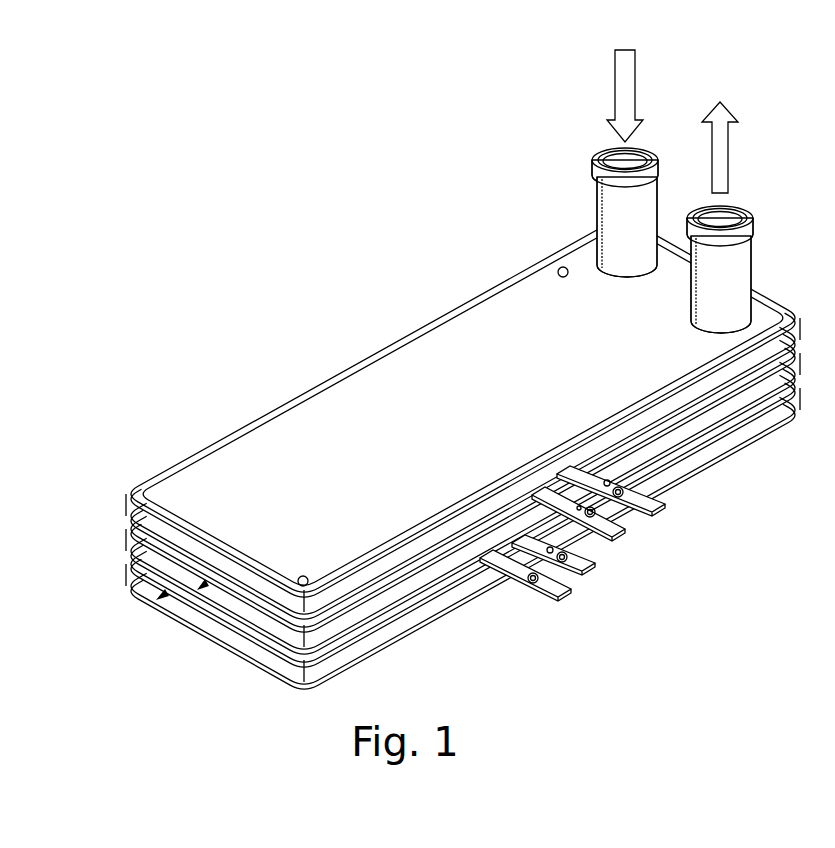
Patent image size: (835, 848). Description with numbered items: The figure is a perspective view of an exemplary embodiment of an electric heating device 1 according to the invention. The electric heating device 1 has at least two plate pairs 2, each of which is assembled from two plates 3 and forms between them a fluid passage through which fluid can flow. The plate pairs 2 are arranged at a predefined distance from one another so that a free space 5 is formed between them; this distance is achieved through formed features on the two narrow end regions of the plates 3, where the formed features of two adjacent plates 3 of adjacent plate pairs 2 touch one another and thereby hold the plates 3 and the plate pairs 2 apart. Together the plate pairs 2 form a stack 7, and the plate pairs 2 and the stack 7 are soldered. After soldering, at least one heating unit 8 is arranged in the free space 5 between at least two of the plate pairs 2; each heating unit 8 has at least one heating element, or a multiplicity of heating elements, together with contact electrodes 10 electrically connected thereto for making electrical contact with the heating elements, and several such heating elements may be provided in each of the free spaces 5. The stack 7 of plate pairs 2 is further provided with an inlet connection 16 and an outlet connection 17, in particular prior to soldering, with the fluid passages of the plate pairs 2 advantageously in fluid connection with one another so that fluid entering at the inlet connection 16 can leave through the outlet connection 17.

The electric heating device 1 is at (468, 200).
The plate pair 2 is at (122, 575).
The plate 3 is at (228, 468).
The free space 5 is at (202, 584).
The stack 7 is at (375, 326).
The heating unit 8 is at (634, 526).
The contact electrode 10 is at (652, 483).
The inlet connection 16 is at (650, 197).
The outlet connection 17 is at (743, 267).